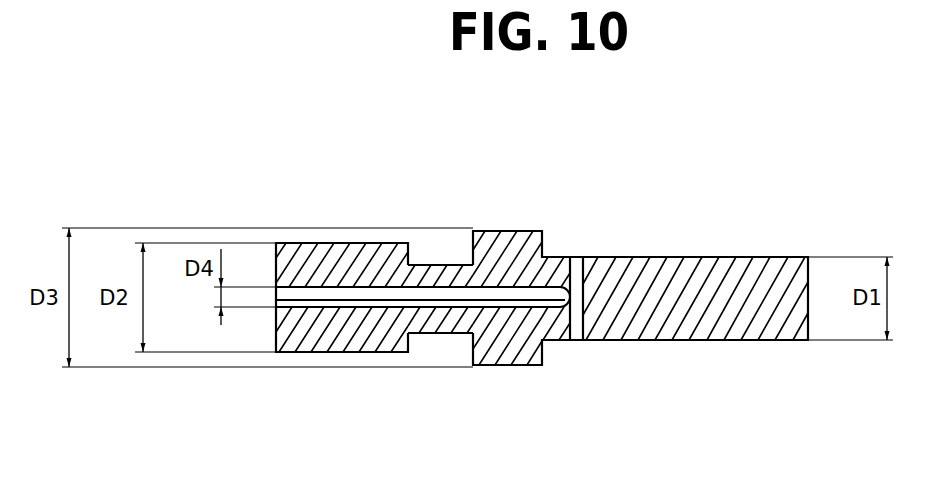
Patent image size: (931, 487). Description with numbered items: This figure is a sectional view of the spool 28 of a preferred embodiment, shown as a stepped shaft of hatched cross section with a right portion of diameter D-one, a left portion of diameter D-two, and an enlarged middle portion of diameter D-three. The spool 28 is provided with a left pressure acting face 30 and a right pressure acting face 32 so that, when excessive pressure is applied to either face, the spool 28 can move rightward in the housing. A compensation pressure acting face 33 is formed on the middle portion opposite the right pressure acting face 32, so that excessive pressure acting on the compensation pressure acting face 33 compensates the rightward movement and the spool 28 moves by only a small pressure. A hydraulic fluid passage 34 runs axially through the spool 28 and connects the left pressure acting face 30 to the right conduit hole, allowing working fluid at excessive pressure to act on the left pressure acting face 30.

The spool 28 is at (713, 252).
The left pressure acting face 30 is at (275, 265).
The right pressure acting face 32 is at (476, 352).
The compensation pressure acting face 33 is at (549, 240).
The hydraulic fluid passage 34 is at (445, 293).